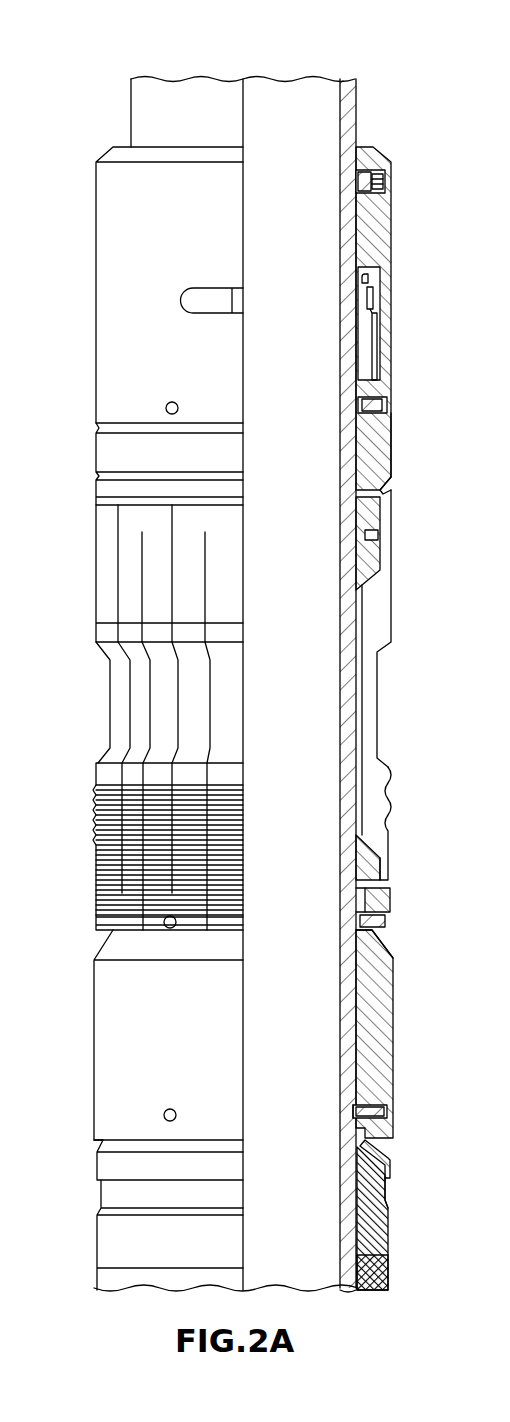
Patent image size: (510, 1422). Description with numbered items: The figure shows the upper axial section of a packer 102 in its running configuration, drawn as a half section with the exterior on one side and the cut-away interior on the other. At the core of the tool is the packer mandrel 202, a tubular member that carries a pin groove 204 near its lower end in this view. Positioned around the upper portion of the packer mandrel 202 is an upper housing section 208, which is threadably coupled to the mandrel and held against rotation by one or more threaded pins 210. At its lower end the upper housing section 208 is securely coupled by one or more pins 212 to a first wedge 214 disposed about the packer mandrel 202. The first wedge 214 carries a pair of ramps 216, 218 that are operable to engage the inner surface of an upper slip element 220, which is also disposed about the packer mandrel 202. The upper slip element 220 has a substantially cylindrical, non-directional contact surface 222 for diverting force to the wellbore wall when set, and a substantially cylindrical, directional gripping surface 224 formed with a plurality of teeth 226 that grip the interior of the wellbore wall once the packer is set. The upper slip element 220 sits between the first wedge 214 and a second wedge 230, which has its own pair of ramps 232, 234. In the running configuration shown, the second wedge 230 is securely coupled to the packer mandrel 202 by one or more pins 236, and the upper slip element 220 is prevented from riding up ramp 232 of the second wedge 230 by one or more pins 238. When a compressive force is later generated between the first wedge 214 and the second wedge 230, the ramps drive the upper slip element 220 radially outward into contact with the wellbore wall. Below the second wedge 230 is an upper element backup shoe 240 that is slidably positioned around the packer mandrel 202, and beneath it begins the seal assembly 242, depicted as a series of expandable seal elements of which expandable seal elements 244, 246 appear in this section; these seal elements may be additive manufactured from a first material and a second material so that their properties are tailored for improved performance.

The packer 102 is at (110, 62).
The packer mandrel 202 is at (350, 670).
The pin groove 204 is at (343, 1113).
The upper housing section 208 is at (388, 330).
The threaded pins 210 is at (377, 160).
The pins 212 is at (388, 405).
The first wedge 214 is at (392, 462).
The ramp 216 is at (392, 492).
The ramp 218 is at (382, 578).
The upper slip element 220 is at (372, 710).
The non-directional contact surface 222 is at (380, 536).
The directional gripping surface 224 is at (390, 880).
The teeth 226 is at (392, 806).
The second wedge 230 is at (383, 1030).
The ramp 232 is at (385, 955).
The ramp 234 is at (383, 830).
The pins 236 is at (390, 1112).
The pins 238 is at (388, 915).
The upper element backup shoe 240 is at (392, 1157).
The seal assembly 242 is at (389, 1240).
The expandable seal element 244 is at (388, 1205).
The expandable seal element 246 is at (388, 1280).